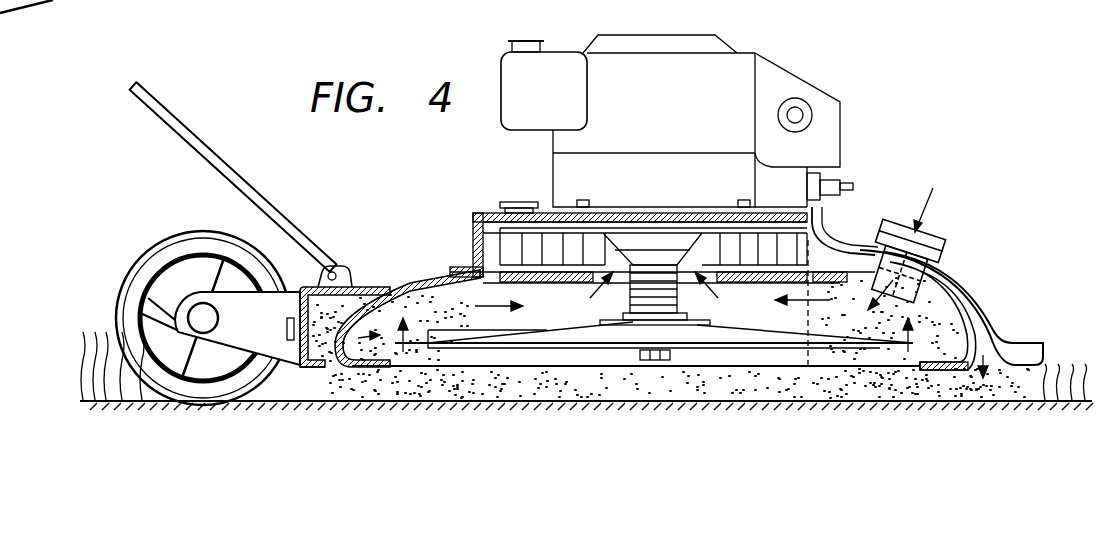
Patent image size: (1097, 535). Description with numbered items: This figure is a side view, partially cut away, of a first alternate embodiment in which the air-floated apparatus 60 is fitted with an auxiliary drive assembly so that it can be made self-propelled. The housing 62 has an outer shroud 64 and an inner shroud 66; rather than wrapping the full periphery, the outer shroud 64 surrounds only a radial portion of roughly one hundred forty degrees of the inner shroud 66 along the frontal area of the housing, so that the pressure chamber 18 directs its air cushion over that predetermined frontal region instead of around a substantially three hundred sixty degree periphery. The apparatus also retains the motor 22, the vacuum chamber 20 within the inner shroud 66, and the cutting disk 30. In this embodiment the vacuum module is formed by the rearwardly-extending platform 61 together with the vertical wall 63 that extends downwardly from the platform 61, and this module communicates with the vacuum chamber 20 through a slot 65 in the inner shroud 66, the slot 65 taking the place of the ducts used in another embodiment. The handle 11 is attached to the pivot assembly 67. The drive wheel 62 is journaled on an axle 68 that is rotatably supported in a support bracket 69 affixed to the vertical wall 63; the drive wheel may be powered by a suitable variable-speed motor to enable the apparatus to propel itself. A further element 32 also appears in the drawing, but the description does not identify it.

The handle 11 is at (262, 192).
The pressure chamber 18 is at (955, 298).
The vacuum chamber 20 is at (533, 322).
The motor 22 is at (773, 76).
The cutting disk 30 is at (673, 332).
The blade tip air flow region 32 is at (0, 53).
The air-floated apparatus 60 is at (966, 221).
The rearwardly-extending platform 61 is at (377, 284).
The drive wheel 62 is at (163, 255).
The vertical wall 63 is at (327, 350).
The outer shroud 64 is at (838, 250).
The slot 65 is at (357, 330).
The inner shroud 66 is at (857, 270).
The pivot assembly 67 is at (335, 266).
The axle 68 is at (197, 320).
The support bracket 69 is at (293, 367).